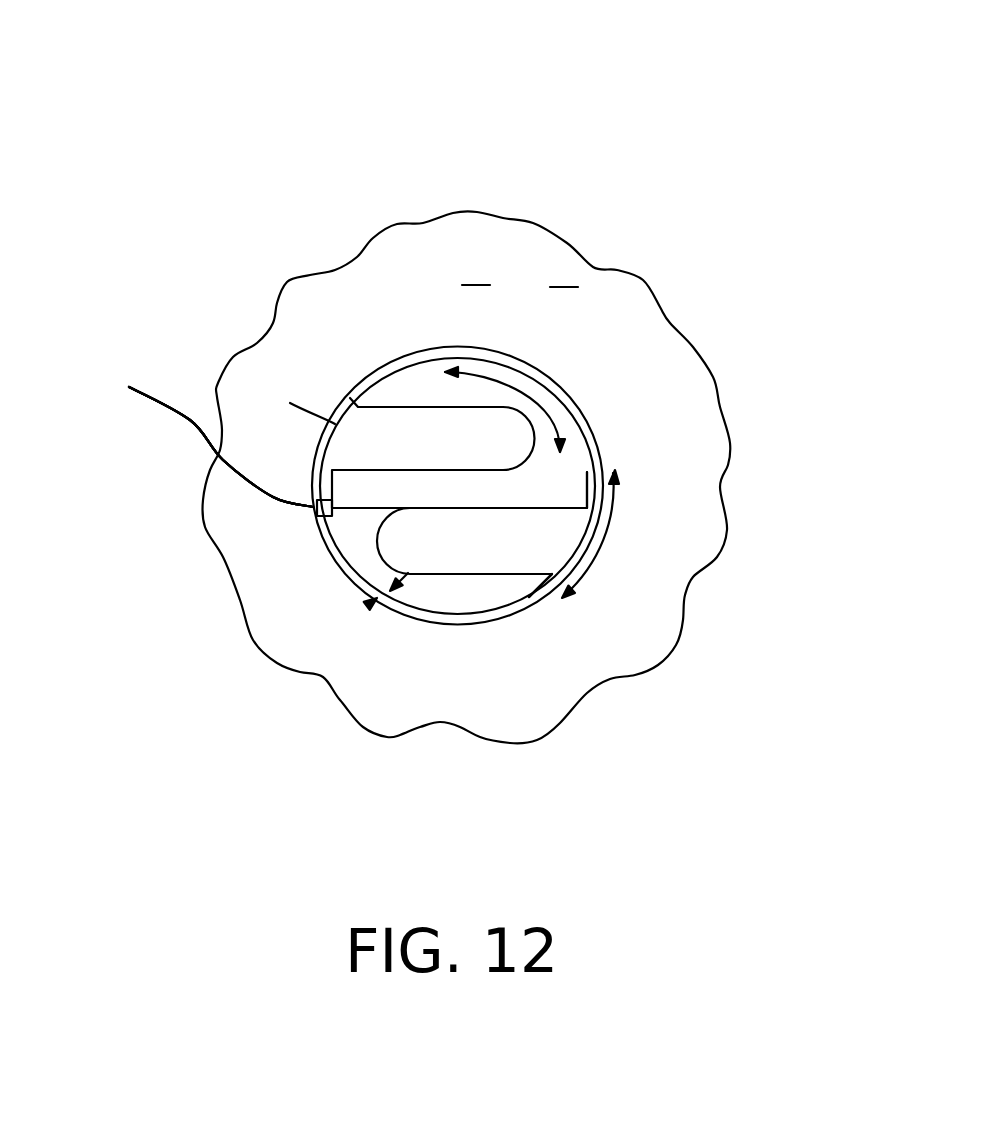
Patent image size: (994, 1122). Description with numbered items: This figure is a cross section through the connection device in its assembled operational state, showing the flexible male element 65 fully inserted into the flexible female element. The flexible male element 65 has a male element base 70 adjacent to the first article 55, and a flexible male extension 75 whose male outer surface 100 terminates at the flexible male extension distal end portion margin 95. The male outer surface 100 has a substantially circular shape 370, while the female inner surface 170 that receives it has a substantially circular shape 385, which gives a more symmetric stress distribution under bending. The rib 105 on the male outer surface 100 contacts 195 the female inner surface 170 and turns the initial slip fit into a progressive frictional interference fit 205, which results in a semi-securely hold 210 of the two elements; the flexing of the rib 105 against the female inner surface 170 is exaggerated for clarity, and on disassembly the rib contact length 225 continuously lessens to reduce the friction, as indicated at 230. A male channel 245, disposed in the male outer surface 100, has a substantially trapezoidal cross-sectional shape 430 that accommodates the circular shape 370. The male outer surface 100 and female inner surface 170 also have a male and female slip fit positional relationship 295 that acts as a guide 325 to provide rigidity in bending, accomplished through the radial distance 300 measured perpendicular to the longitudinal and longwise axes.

The flexible male element 65 is at (604, 101).
The male element base 70 is at (476, 272).
The first article 55 is at (564, 275).
The male outer surface 100 is at (558, 402).
The flexible male extension 75 is at (578, 432).
The flexible male extension distal end portion margin 95 is at (567, 487).
The female inner surface 170 is at (290, 403).
The substantially trapezoidal cross-sectional shape 430 is at (403, 448).
The male channel 245 is at (423, 407).
The substantially circular shape 370 is at (507, 380).
The substantially circular shape 385 is at (611, 537).
The rib 105 is at (316, 509).
The flow path element 230 is at (197, 440).
The rib contact length 225 is at (197, 447).
The contacts 195 is at (197, 447).
The progressive frictional interference fit 205 is at (197, 447).
The semi-securely hold 210 is at (199, 452).
The radial distance 300 is at (371, 604).
The male and female slip fit positional relationship 295 is at (522, 610).
The guide 325 is at (522, 610).